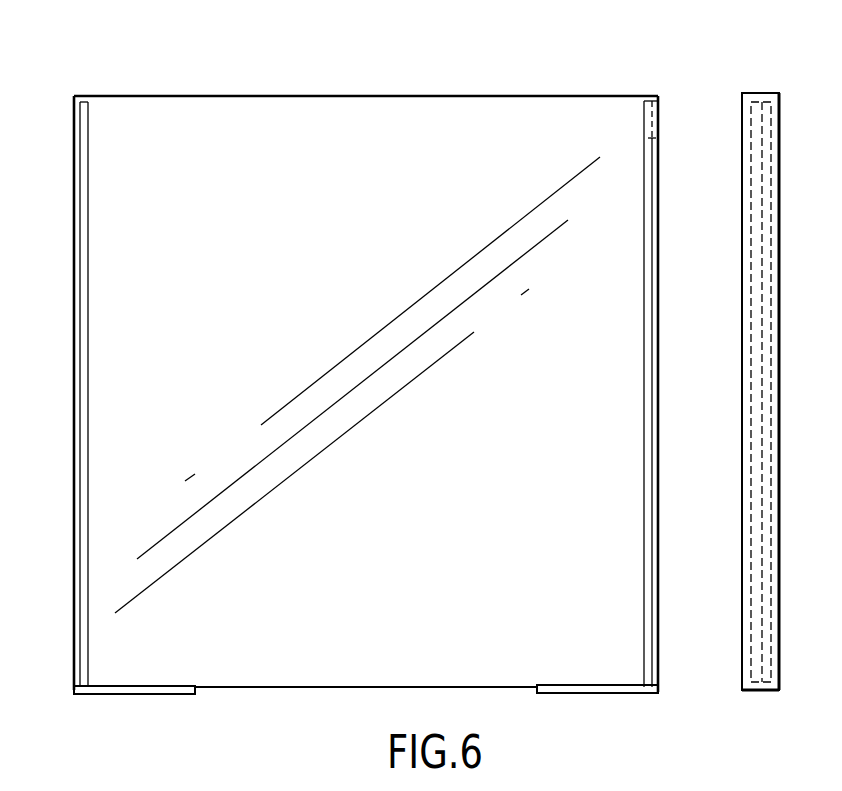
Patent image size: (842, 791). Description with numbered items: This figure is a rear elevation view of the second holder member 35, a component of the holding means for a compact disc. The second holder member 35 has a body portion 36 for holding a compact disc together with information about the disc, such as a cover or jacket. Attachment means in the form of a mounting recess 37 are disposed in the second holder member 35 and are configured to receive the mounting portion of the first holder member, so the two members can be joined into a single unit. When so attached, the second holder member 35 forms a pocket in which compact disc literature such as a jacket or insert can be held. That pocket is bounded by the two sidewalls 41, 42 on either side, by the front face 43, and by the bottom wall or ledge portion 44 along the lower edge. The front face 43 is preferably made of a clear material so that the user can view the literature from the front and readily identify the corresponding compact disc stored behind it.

The second holder member 35 is at (249, 100).
The body portion 36 is at (670, 238).
The mounting recess 37 is at (650, 117).
The sidewall 41 is at (643, 489).
The sidewall 42 is at (90, 268).
The front face 43 is at (461, 184).
The bottom wall or ledge portion 44 is at (142, 686).